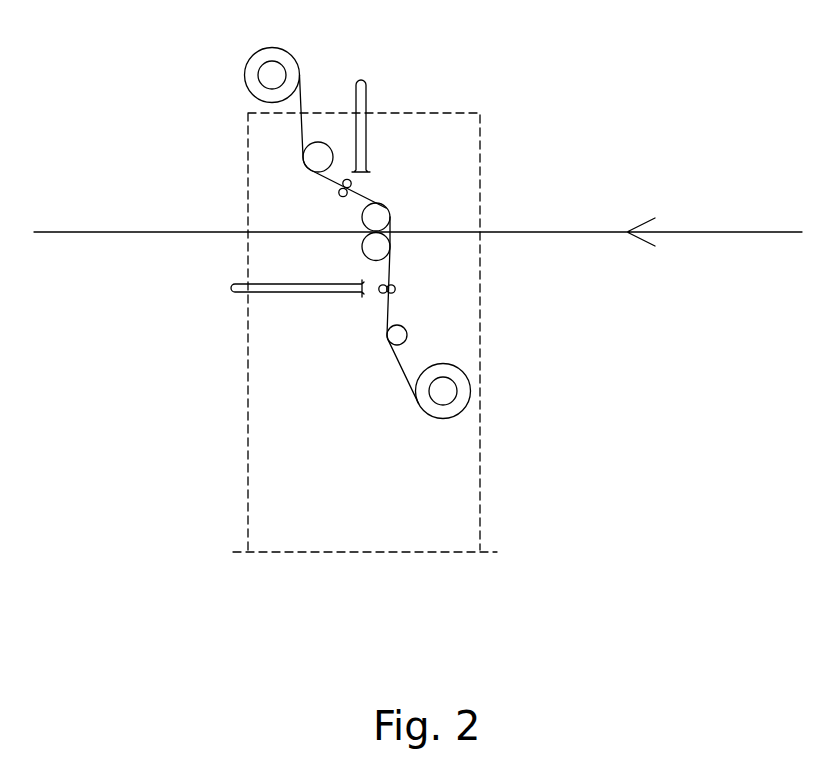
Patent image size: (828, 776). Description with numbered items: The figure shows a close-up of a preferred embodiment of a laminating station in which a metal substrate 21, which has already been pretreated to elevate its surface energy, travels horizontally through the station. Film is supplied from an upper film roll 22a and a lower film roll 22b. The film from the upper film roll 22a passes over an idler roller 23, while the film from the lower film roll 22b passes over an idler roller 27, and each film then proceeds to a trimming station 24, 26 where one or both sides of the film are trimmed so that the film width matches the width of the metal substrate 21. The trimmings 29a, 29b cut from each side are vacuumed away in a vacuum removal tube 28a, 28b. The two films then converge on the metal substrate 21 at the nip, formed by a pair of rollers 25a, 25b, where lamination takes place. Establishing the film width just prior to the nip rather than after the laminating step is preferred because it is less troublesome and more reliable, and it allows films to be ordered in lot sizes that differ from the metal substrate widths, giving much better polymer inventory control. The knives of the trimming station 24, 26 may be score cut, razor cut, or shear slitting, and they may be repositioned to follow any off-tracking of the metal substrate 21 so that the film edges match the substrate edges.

The metal substrate 21 is at (702, 229).
The upper film roll 22a is at (255, 52).
The lower film roll 22b is at (470, 391).
The idler roller 23 is at (303, 158).
The trimming station 24 is at (338, 190).
The upper nip roller 25a is at (395, 218).
The lower nip roller 25b is at (395, 246).
The trimming station 26 is at (400, 291).
The idler roller 27 is at (410, 335).
The vacuum removal tube 28a is at (368, 102).
The vacuum removal tube 28b is at (238, 281).
The trimmings 29a is at (362, 174).
The trimmings 29b is at (372, 293).